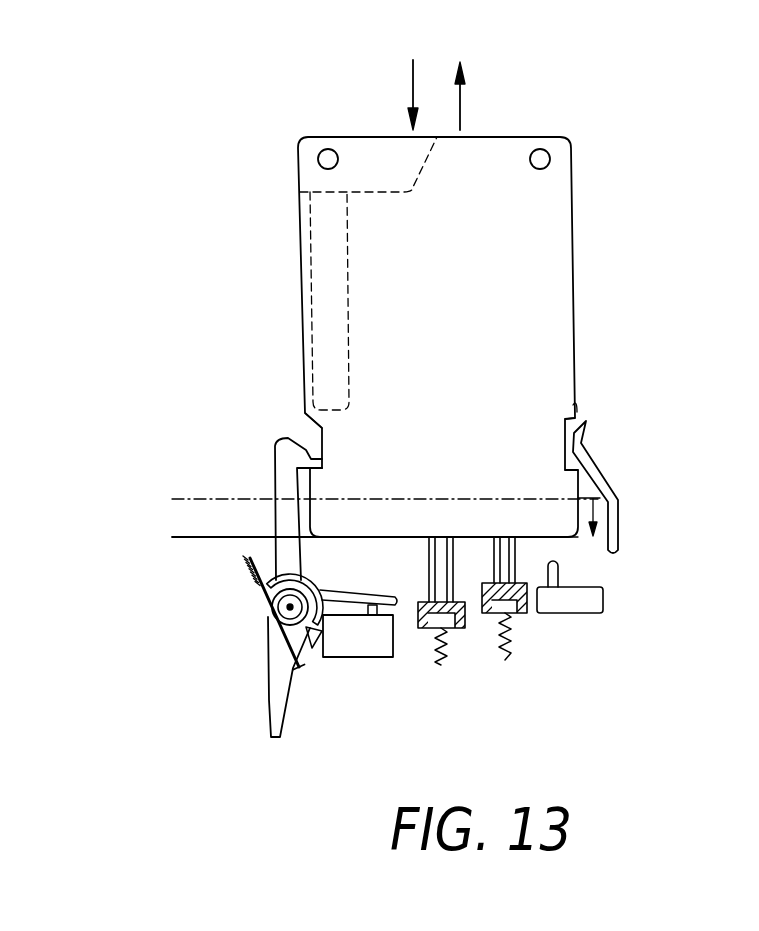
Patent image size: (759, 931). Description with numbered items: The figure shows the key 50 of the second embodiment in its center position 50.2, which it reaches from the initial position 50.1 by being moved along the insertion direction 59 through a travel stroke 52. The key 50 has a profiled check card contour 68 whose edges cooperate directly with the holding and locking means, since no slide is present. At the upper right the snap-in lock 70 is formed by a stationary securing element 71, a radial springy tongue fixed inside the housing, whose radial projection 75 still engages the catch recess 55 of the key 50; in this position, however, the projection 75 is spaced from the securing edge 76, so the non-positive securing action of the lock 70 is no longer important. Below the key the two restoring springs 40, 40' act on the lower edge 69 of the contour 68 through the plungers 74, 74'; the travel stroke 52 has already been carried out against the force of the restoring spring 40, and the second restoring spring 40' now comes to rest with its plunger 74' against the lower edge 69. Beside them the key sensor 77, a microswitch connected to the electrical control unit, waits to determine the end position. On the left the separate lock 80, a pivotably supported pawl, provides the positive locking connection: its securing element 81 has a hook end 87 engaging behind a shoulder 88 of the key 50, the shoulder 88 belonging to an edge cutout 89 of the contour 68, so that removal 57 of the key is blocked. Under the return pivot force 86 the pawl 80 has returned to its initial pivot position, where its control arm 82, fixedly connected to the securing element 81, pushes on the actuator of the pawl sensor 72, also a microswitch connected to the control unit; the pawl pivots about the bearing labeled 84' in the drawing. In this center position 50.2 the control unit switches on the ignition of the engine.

The key 50 is at (481, 306).
The check card contour 68 is at (574, 273).
The removal 57 is at (460, 107).
The insertion 59 is at (413, 73).
The radial projection 75 is at (577, 406).
The snap-in lock 70 is at (641, 482).
The securing element 71 is at (612, 478).
The catch recess 55 is at (566, 430).
The securing edge 76 is at (566, 470).
The travel stroke 52 is at (596, 517).
The lower edge 69 is at (558, 539).
The initial position 50.1 is at (198, 499).
The center position 50.2 is at (205, 537).
The plunger 74 is at (450, 546).
The plunger 74' is at (509, 538).
The restoring spring 40 is at (446, 676).
The restoring spring 40' is at (513, 669).
The key sensor 77 is at (573, 598).
The pawl 80 is at (260, 550).
The securing element 81 is at (270, 450).
The hook end 87 is at (308, 452).
The shoulder 88 is at (323, 470).
The edge cutout 89 is at (312, 438).
The return pivot force 86 is at (310, 588).
The control arm 82 is at (382, 600).
The pawl sensor 72 is at (348, 640).
The tension rod 84' is at (256, 617).